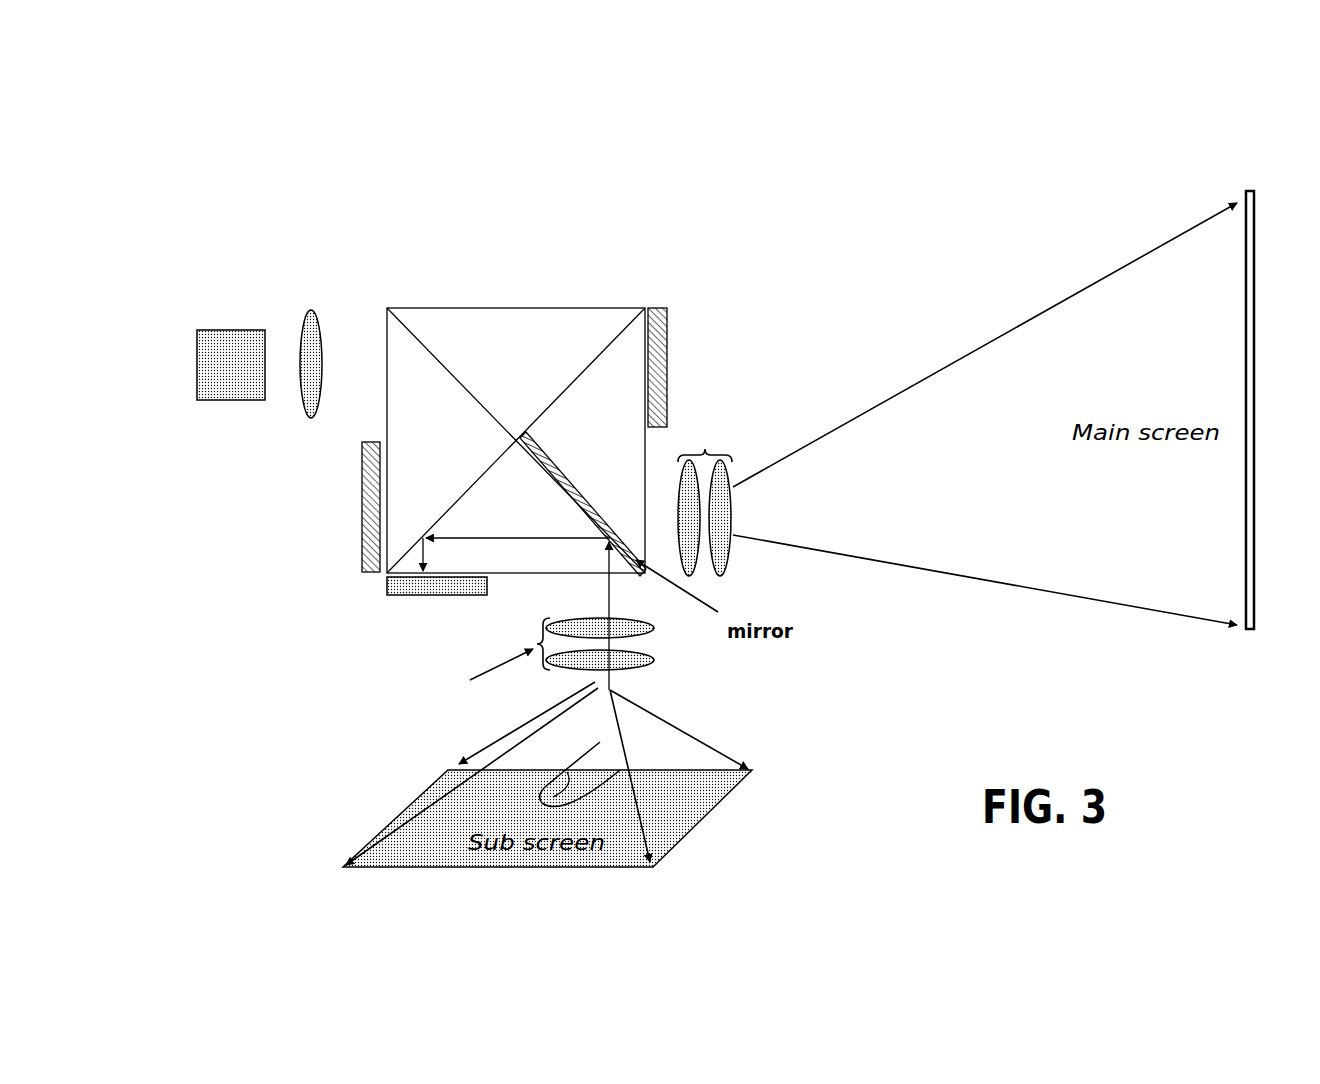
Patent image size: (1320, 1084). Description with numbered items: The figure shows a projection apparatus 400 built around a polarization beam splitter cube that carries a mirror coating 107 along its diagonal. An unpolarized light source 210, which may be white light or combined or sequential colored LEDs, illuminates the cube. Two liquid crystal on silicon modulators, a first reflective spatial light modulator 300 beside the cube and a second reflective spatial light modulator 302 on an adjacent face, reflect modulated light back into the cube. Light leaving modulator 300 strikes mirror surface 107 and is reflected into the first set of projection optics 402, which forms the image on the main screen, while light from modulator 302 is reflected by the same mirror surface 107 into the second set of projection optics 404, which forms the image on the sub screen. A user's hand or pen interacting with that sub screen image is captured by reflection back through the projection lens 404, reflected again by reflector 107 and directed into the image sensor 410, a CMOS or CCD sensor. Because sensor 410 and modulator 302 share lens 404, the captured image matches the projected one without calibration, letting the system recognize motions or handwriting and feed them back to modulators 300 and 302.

The mirror coating 107 is at (552, 462).
The light source 210 is at (213, 355).
The first reflective spatial light modulator 300 is at (655, 315).
The reflective spatial light modulator 302 is at (368, 560).
The projection apparatus 400 is at (690, 253).
The first set of projection optics 402 is at (716, 440).
The second set of projection optics 404 is at (632, 658).
The image sensor 410 is at (390, 588).